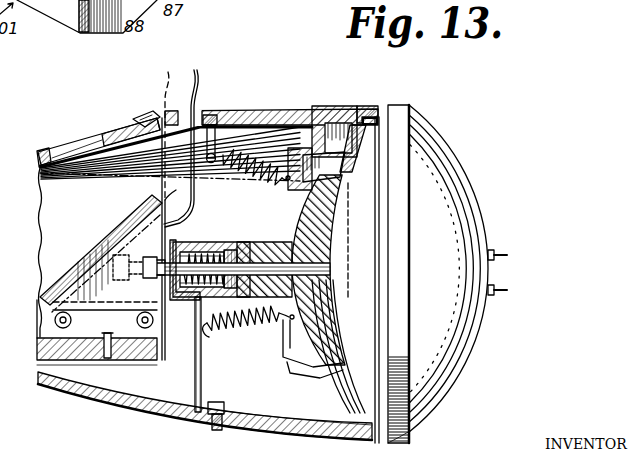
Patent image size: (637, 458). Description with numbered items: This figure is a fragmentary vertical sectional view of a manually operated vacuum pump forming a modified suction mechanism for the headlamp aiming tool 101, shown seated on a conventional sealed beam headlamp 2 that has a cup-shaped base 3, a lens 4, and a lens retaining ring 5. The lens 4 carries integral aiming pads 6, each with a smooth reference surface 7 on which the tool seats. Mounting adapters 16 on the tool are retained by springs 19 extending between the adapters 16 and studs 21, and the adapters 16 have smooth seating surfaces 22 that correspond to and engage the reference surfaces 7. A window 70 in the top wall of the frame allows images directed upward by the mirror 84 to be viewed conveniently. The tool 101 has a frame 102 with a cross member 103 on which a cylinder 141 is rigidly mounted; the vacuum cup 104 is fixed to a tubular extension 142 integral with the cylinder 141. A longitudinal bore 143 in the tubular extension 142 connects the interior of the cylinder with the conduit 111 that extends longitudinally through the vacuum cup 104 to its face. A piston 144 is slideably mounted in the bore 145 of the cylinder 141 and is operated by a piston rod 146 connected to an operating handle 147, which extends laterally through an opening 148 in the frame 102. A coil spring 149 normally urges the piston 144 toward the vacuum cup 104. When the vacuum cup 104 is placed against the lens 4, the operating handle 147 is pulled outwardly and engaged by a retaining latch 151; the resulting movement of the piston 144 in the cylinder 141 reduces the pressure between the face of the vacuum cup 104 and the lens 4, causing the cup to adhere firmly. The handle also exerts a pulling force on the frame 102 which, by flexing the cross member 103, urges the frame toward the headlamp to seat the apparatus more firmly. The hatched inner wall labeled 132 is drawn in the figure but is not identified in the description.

The sealed beam headlamp 2 is at (472, 175).
The cup-shaped base 3 is at (457, 372).
The lens 4 is at (356, 392).
The lens retaining ring 5 is at (402, 303).
The aiming pads 6 is at (372, 127).
The reference surface 7 is at (372, 130).
The mounting adapters 16 is at (328, 107).
The springs 19 is at (254, 180).
The studs 21 is at (217, 115).
The seating surfaces 22 is at (366, 106).
The window 70 is at (72, 152).
The mirror 84 is at (122, 232).
The headlamp aiming tool 101 is at (132, 423).
The frame 102 is at (182, 428).
The cross member 103 is at (201, 370).
The vacuum cup 104 is at (310, 222).
The conduit 111 is at (378, 228).
The inner wall 132 is at (137, 362).
The cylinder 141 is at (218, 250).
The tubular extension 142 is at (284, 243).
The longitudinal bore 143 is at (280, 318).
The piston 144 is at (200, 312).
The bore 145 is at (205, 240).
The piston rod 146 is at (170, 281).
The operating handle 147 is at (173, 186).
The opening 148 is at (179, 112).
The coil spring 149 is at (233, 250).
The retaining latch 151 is at (140, 118).